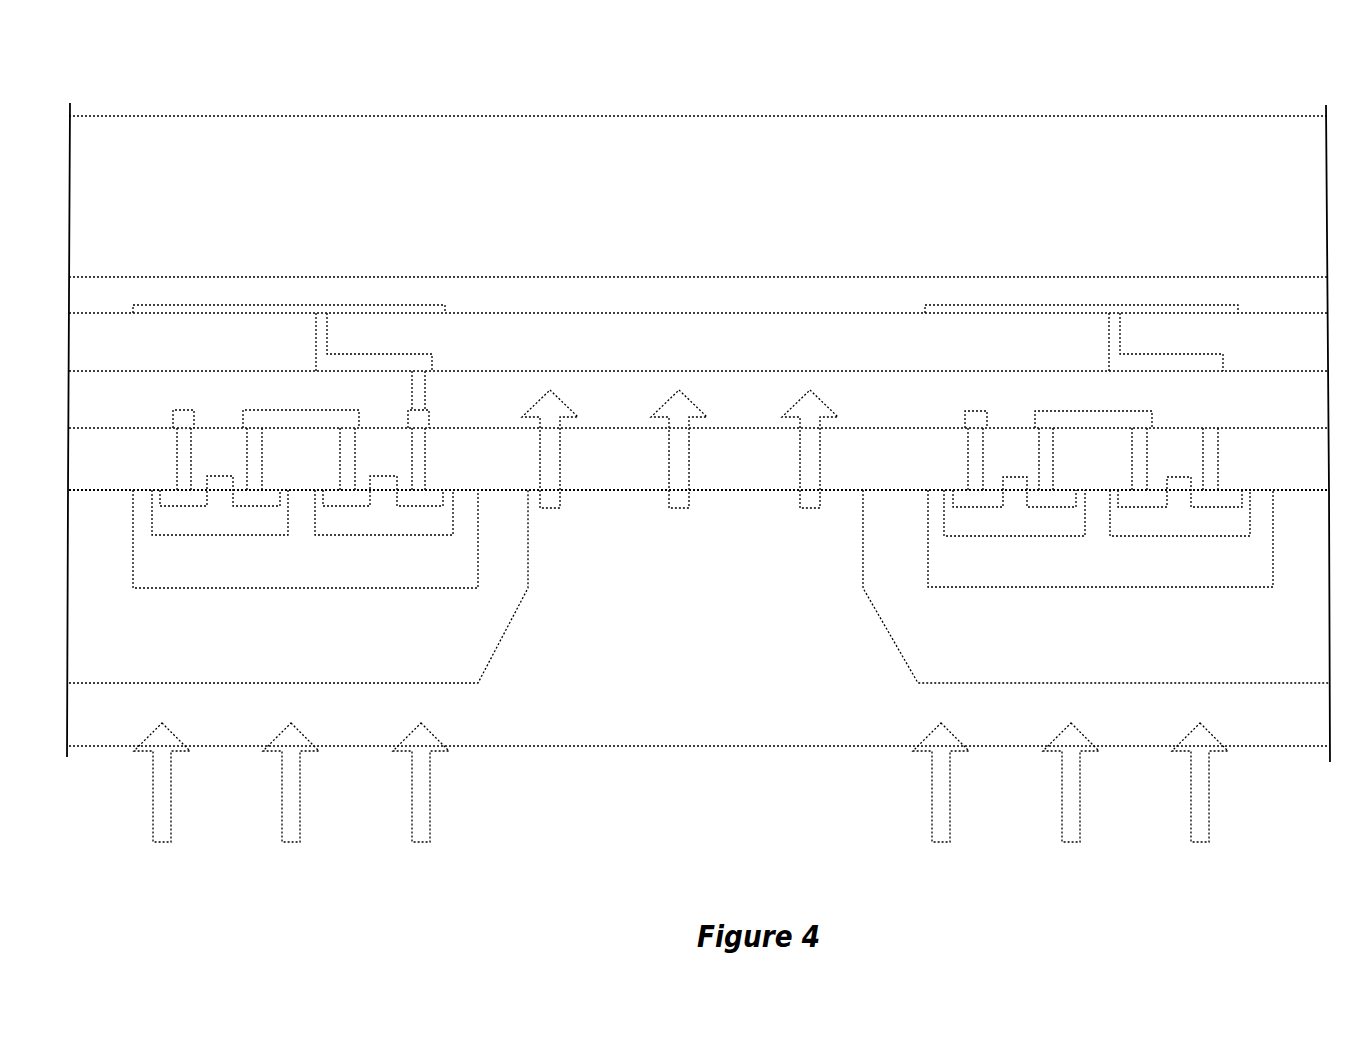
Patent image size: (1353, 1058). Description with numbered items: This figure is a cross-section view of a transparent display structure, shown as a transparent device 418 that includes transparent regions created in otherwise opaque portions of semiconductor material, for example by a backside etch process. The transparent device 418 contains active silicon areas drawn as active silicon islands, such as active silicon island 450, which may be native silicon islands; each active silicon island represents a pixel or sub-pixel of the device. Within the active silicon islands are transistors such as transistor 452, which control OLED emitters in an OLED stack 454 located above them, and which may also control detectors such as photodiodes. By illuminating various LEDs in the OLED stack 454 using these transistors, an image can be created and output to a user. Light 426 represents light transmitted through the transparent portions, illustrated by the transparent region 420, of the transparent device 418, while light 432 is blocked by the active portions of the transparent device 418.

The transparent device 418 is at (1285, 74).
The transparent region 420 is at (710, 596).
The light 426 is at (823, 410).
The light 432 is at (420, 797).
The active silicon island 450 is at (278, 630).
The transistor 452 is at (233, 528).
The OLED stack 454 is at (693, 305).